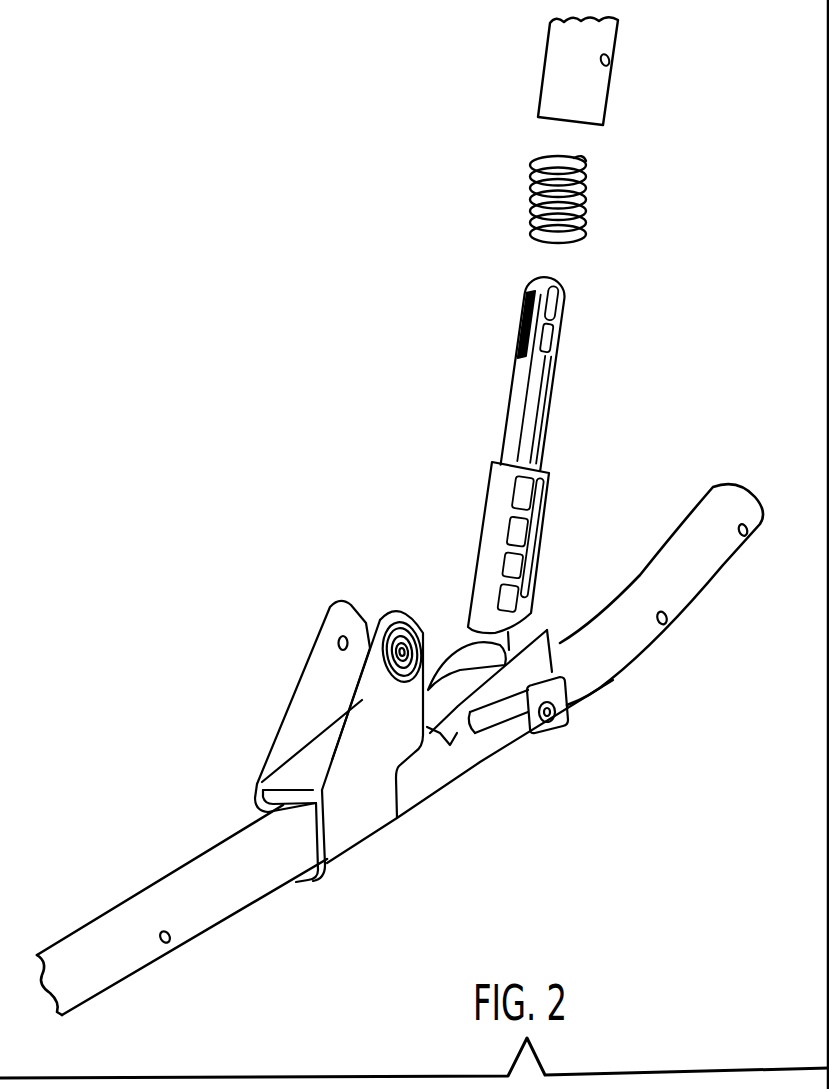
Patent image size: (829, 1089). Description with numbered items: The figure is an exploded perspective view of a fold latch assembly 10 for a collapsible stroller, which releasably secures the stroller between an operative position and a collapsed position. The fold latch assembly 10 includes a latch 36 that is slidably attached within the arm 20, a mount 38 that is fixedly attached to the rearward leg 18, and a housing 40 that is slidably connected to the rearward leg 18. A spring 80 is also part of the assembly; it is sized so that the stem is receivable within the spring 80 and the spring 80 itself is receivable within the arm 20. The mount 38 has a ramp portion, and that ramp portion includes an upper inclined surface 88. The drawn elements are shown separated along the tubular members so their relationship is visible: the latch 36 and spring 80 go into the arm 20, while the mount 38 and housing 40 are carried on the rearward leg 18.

The fold latch assembly 10 is at (240, 313).
The rearward leg 18 is at (228, 908).
The arm 20 is at (548, 77).
The latch 36 is at (492, 442).
The mount 38 is at (568, 752).
The housing 40 is at (265, 715).
The spring 80 is at (590, 200).
The upper inclined surface 88 is at (447, 693).